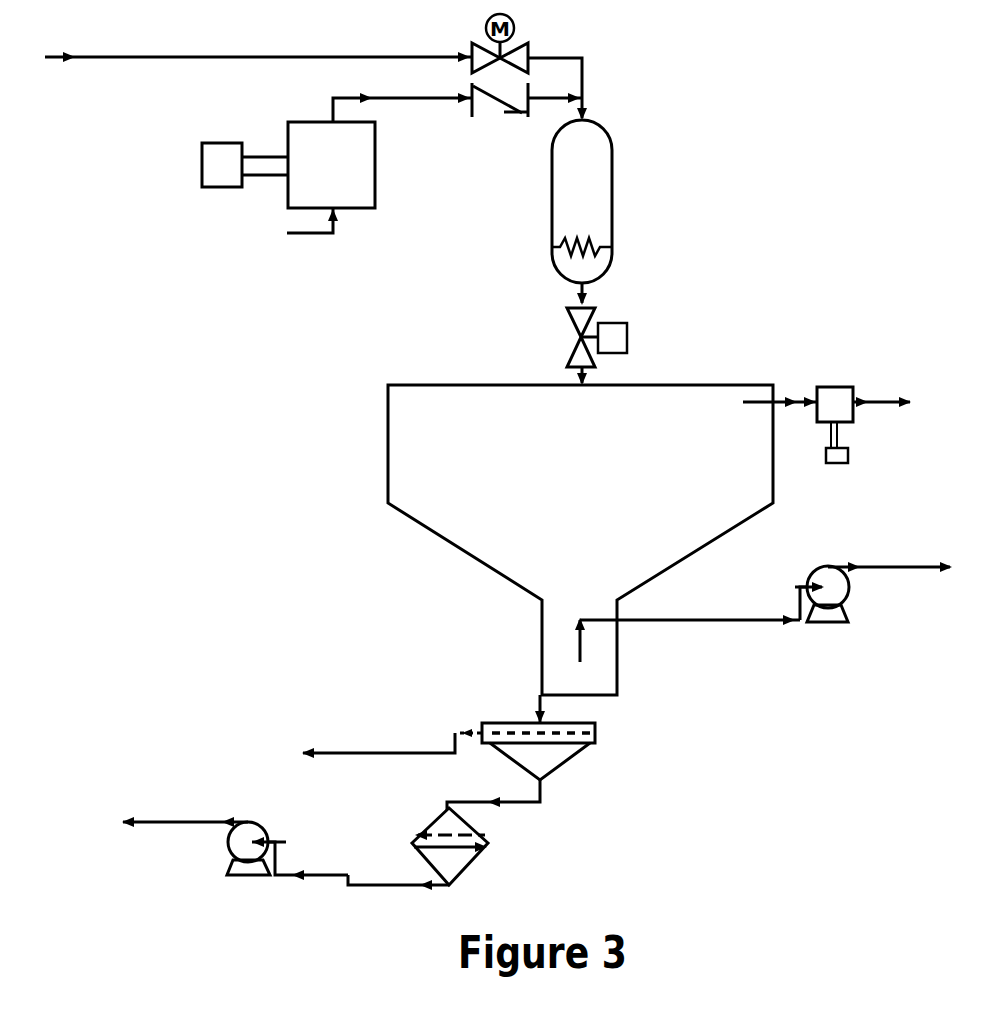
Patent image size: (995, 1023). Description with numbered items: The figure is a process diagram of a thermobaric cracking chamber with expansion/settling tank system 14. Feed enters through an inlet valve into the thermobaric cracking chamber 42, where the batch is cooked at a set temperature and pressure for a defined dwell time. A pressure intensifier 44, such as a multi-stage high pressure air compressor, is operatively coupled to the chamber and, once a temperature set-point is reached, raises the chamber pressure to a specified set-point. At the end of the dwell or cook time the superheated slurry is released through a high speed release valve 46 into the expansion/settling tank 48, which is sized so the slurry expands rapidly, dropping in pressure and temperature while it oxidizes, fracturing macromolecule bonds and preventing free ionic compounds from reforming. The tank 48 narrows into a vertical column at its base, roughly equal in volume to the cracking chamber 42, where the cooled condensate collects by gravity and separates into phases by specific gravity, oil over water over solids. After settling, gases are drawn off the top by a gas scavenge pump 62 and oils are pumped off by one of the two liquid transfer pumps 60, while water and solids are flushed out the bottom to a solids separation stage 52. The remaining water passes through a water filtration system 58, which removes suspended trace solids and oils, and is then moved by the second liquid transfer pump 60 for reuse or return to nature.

The thermobaric cracking chamber with expansion/settling tank system 14 is at (810, 134).
The thermobaric cracking chamber 42 is at (582, 212).
The pressure intensifier 44 is at (337, 163).
The high speed release valve 46 is at (617, 346).
The expansion/settling tank 48 is at (594, 554).
The solids separation stage 52 is at (456, 766).
The water filtration system 58 is at (426, 849).
The liquid transfer pump 60 is at (537, 709).
The gas scavenge pump 62 is at (827, 407).